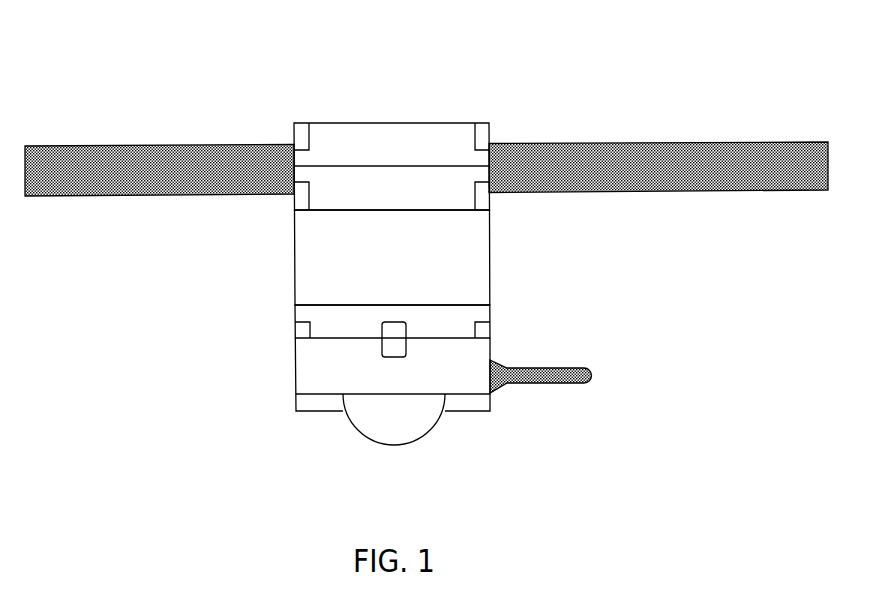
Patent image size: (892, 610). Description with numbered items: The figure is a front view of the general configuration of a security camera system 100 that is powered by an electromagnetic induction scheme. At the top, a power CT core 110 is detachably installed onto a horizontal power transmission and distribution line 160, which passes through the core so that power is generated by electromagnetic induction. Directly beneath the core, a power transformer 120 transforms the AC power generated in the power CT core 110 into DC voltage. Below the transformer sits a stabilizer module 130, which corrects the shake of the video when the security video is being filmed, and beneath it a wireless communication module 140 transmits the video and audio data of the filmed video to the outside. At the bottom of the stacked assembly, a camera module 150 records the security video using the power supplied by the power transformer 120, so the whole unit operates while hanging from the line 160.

The security camera system 100 is at (617, 43).
The power CT core 110 is at (392, 131).
The power transformer 120 is at (490, 252).
The stabilizer module 130 is at (490, 317).
The wireless communication module 140 is at (297, 365).
The camera module 150 is at (394, 438).
The power transmission and distribution line 160 is at (728, 152).